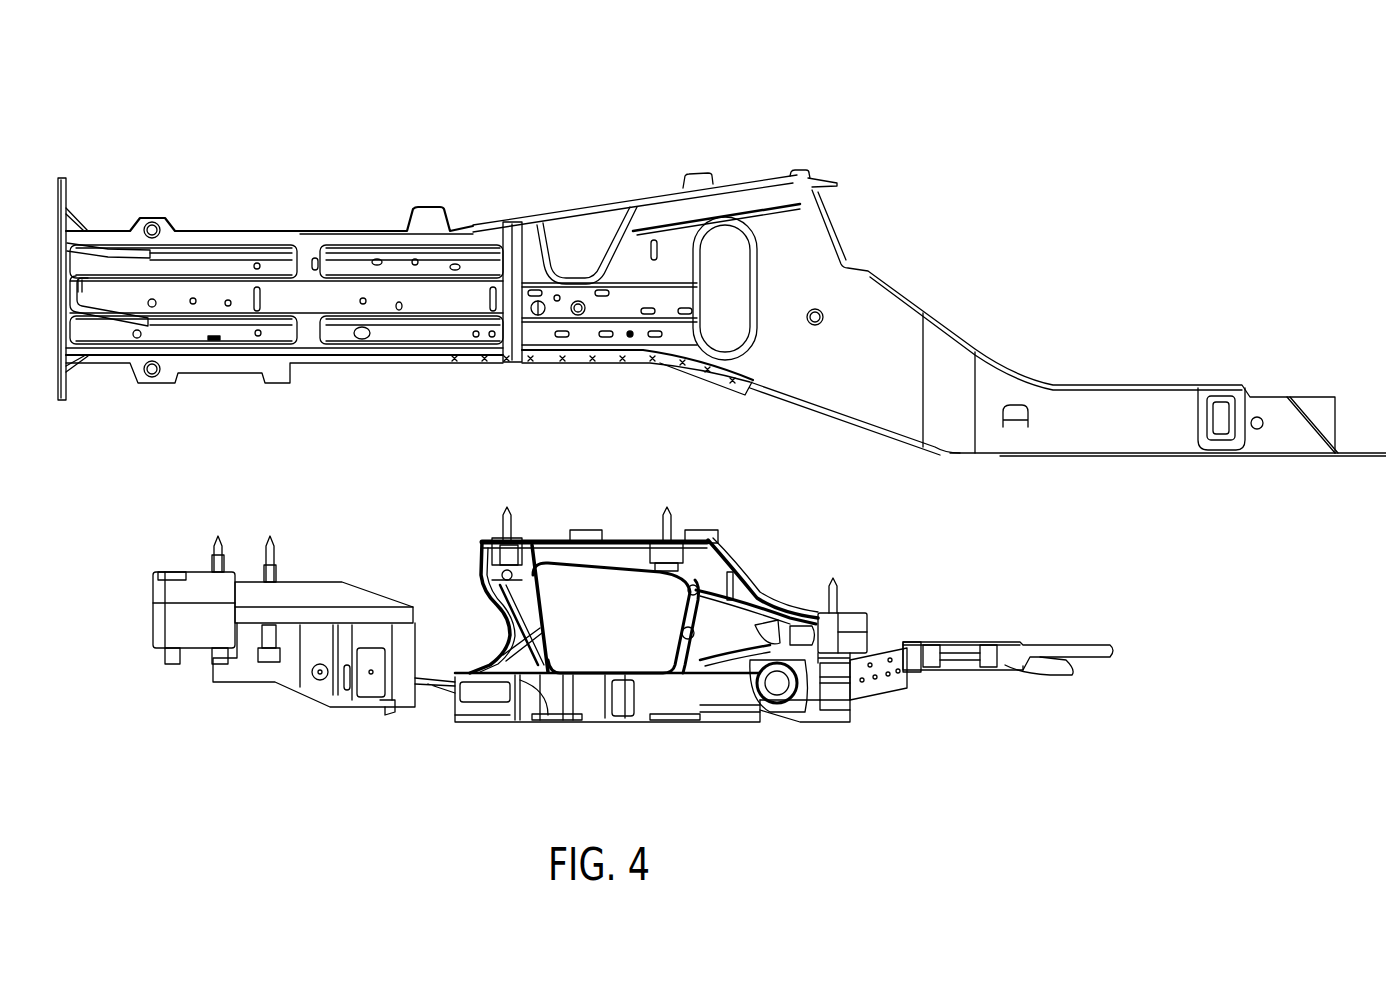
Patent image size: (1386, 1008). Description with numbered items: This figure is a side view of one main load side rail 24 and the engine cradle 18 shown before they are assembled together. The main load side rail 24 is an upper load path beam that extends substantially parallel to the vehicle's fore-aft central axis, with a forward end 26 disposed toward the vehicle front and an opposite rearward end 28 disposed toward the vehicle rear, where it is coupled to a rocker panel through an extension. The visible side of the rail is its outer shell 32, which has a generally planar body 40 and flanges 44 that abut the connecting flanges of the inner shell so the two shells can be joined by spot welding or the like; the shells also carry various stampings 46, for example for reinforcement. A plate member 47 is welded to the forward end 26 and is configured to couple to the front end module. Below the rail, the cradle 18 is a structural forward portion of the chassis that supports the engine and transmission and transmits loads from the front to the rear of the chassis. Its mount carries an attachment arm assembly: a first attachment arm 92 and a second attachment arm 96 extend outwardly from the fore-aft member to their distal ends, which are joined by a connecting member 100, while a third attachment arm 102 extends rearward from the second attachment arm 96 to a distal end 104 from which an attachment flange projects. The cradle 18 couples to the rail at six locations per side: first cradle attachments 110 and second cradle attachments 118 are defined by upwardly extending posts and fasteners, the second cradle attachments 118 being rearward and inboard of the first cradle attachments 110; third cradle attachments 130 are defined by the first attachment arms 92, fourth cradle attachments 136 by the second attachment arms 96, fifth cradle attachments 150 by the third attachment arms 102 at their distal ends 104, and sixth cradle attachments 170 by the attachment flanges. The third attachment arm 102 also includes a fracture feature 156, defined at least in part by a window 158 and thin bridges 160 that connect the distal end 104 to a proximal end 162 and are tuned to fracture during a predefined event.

The cradle 18 is at (264, 707).
The main load side rail 24 is at (752, 116).
The forward end 26 is at (110, 195).
The rearward end 28 is at (900, 223).
The outer shell 32 is at (390, 216).
The planar body 40 is at (462, 291).
The flanges 44 is at (259, 230).
The stampings 46 is at (126, 330).
The plate member 47 is at (59, 177).
The first attachment arm 92 is at (550, 614).
The second attachment arm 96 is at (686, 622).
The connecting member 100 is at (590, 531).
The third attachment arm 102 is at (769, 612).
The distal end 104 is at (862, 620).
The first cradle attachments 110 is at (224, 510).
The second cradle attachments 118 is at (276, 510).
The third cradle attachments 130 is at (512, 483).
The fourth cradle attachments 136 is at (672, 483).
The fifth cradle attachments 150 is at (856, 541).
The fracture feature 156 is at (803, 591).
The window 158 is at (779, 720).
The thin bridges 160 is at (819, 606).
The proximal end 162 is at (766, 722).
The sixth cradle attachments 170 is at (900, 640).